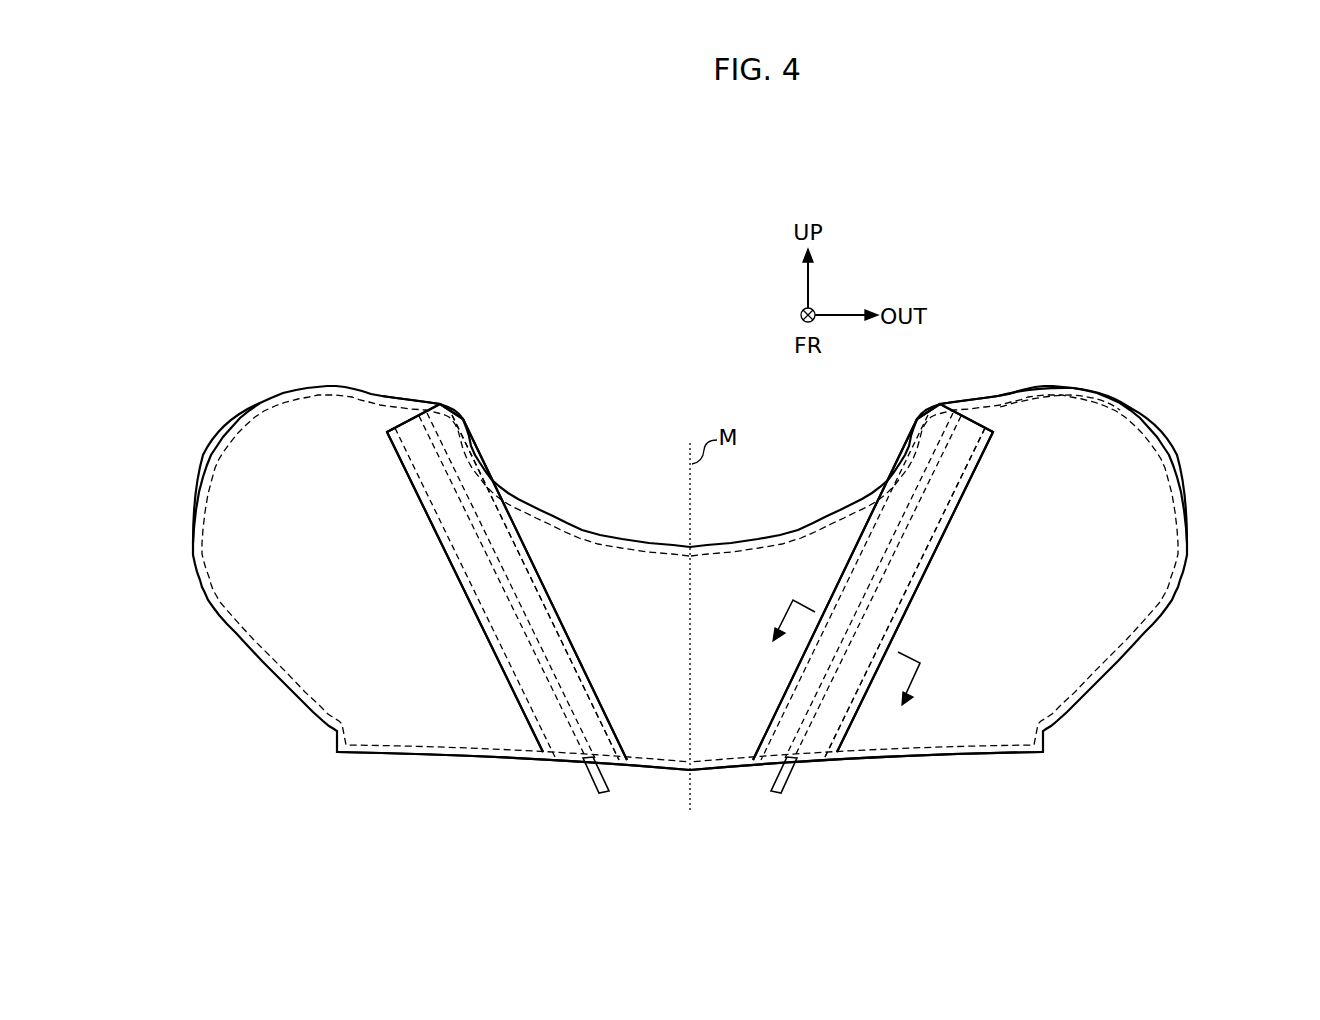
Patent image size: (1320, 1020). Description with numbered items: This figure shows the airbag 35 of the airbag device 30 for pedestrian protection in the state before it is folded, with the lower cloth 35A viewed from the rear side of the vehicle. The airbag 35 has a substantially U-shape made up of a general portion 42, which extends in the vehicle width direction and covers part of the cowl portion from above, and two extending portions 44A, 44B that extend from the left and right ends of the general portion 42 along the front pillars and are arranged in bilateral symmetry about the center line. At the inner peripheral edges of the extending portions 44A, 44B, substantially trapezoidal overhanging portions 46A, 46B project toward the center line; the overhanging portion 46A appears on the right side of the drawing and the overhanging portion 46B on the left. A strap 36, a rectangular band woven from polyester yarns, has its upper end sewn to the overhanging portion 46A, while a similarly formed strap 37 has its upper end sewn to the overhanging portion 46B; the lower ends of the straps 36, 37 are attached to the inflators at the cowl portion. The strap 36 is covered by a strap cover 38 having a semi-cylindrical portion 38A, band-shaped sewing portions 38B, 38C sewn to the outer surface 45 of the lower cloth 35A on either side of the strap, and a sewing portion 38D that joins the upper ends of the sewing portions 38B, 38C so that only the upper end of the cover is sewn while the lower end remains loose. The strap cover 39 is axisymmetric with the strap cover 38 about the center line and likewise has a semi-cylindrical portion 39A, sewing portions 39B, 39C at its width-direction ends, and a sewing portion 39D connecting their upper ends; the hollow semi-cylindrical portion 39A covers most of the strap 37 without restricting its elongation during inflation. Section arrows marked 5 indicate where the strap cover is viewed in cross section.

The airbag device 30 is at (1185, 336).
The airbag 35 is at (1055, 389).
The lower cloth 35A is at (1068, 438).
The strap 36 is at (772, 782).
The strap 37 is at (592, 786).
The strap cover 38 is at (925, 580).
The semi-cylindrical portion 38A is at (890, 600).
The sewing portion 38B is at (858, 543).
The sewing portion 38C is at (945, 523).
The sewing portion 38D is at (948, 400).
The strap cover 39 is at (457, 578).
The semi-cylindrical portion 39A is at (530, 597).
The sewing portion 39B is at (428, 521).
The sewing portion 39C is at (530, 542).
The sewing portion 39D is at (432, 398).
The general portion 42 is at (910, 730).
The extending portion 44A is at (1130, 463).
The extending portion 44B is at (250, 467).
The outer surface 45 is at (1092, 548).
The overhanging portion 46A is at (973, 400).
The overhanging portion 46B is at (410, 400).
The section line 5 is at (836, 667).